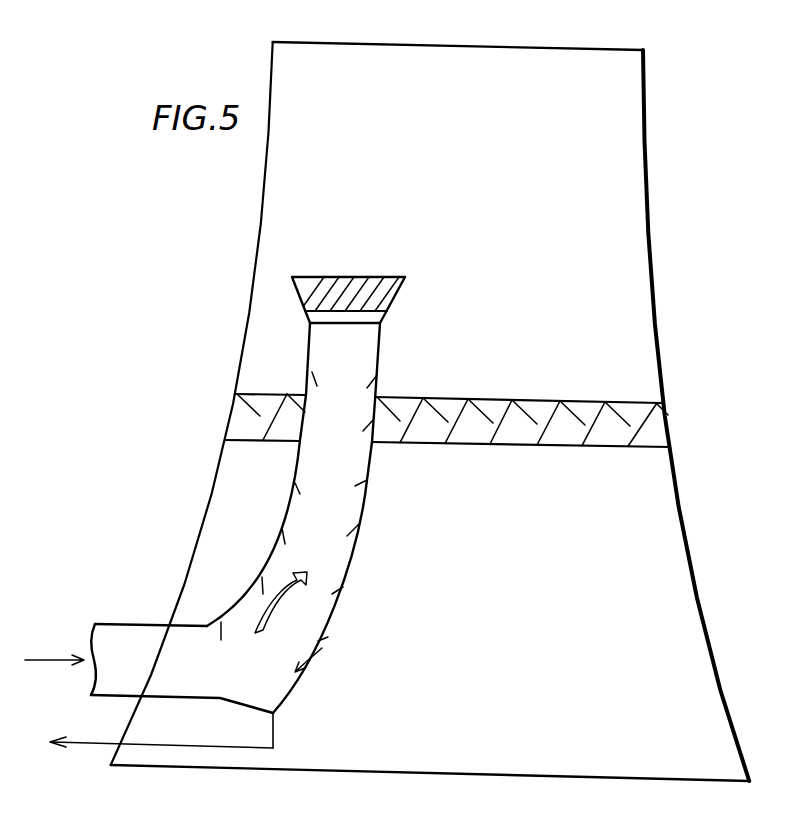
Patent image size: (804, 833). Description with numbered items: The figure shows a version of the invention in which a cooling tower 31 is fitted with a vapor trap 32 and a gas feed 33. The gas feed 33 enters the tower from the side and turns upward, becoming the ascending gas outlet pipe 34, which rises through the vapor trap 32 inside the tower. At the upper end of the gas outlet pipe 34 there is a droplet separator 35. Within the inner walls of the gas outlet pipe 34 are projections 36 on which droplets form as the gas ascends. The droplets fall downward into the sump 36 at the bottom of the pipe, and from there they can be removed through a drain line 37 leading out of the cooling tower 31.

The cooling tower 31 is at (633, 73).
The vapor trap 32 is at (664, 432).
The gas feed 33 is at (140, 623).
The gas outlet pipe 34 is at (310, 325).
The droplet separator 35 is at (393, 290).
The projections 36 is at (368, 477).
The drain line 37 is at (93, 747).